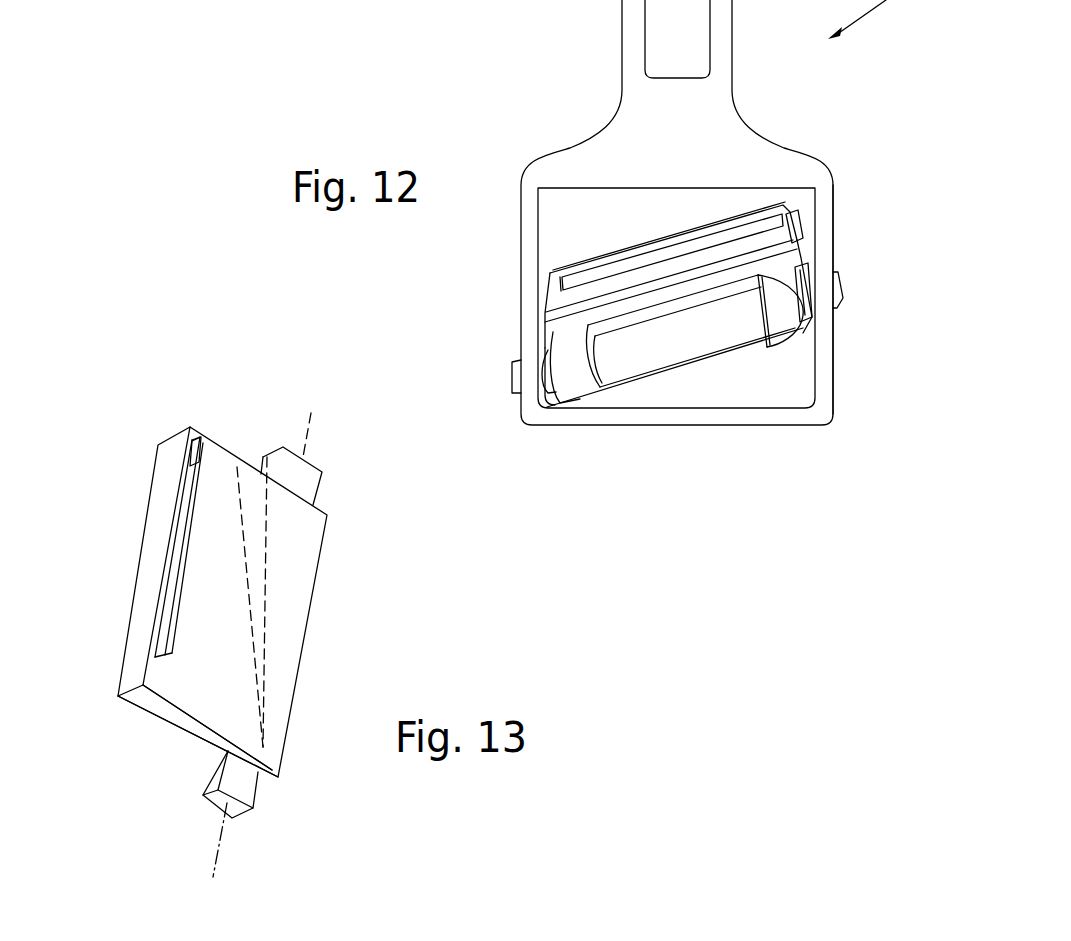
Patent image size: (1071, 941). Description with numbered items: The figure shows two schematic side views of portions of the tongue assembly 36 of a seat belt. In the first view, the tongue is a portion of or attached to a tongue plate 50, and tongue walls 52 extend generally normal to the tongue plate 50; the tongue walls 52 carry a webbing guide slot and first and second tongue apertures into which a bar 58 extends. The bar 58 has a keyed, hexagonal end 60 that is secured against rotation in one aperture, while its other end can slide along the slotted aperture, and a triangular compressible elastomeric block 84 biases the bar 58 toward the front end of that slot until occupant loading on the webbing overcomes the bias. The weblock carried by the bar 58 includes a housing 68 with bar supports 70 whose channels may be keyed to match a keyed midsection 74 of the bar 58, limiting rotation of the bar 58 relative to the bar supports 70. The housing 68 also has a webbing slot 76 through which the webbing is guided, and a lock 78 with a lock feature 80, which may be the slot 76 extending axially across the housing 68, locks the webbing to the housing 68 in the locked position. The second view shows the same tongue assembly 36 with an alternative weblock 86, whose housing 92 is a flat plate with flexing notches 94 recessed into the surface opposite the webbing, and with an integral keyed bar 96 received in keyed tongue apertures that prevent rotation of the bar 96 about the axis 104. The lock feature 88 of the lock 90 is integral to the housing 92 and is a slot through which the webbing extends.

In FIG. 13, the tongue assembly 36 is at (136, 428).
In FIG. 12, the tongue plate 50 is at (800, 154).
In FIG. 12, the tongue walls 52 is at (833, 378).
In FIG. 12, the bar 58 is at (688, 353).
In FIG. 12, the keyed end 60 is at (512, 378).
In FIG. 12, the housing 68 is at (795, 222).
In FIG. 12, the bar supports 70 is at (585, 405).
In FIG. 12, the keyed midsection 74 is at (805, 300).
In FIG. 12, the webbing slot 76 is at (757, 212).
In FIG. 12, the lock 78 is at (697, 235).
In FIG. 12, the lock feature 80 is at (560, 288).
In FIG. 12, the triangular compressible elastomeric block 84 is at (762, 408).
In FIG. 13, the weblock 86 is at (98, 697).
In FIG. 13, the lock feature 88 is at (197, 492).
In FIG. 13, the lock 90 is at (190, 426).
In FIG. 13, the housing 92 is at (165, 733).
In FIG. 13, the flexing notches 94 is at (234, 477).
In FIG. 13, the integral bar 96 is at (262, 793).
In FIG. 13, the axis 104 is at (313, 428).